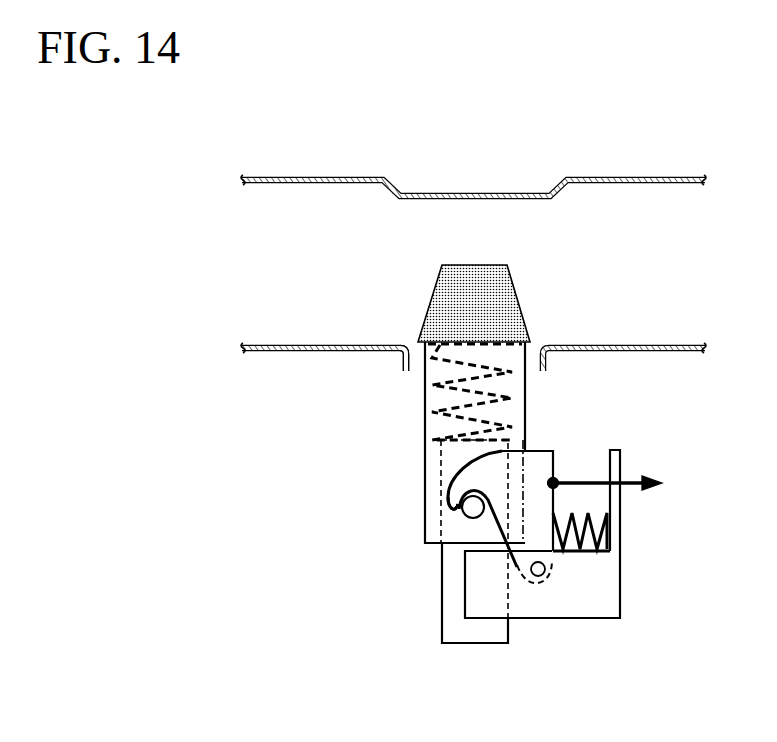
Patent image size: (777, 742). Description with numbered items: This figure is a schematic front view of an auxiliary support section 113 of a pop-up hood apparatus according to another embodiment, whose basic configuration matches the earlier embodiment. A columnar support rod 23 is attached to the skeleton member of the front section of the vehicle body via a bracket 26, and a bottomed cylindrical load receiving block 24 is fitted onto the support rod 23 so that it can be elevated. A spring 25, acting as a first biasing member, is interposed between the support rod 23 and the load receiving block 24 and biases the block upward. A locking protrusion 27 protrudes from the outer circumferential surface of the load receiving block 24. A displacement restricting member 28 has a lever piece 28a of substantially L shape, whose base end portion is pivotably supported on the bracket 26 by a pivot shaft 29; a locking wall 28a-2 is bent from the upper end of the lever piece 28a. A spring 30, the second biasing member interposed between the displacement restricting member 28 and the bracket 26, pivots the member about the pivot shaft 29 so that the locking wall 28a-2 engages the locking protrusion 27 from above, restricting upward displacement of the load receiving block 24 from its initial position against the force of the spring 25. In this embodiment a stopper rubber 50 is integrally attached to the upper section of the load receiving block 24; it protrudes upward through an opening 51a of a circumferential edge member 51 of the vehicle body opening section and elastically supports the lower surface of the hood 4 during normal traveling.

The hood 4 is at (663, 177).
The stopper rubber 50 is at (475, 264).
The circumferential edge member 51 is at (288, 345).
The opening 51a is at (405, 343).
The auxiliary support section 113 is at (548, 330).
The spring 25 is at (428, 322).
The load receiving block 24 is at (425, 420).
The displacement restricting member 28 is at (553, 450).
The lever piece 28a is at (525, 451).
The locking wall 28a-2 is at (452, 497).
The locking protrusion 27 is at (473, 512).
The pivot shaft 29 is at (538, 576).
The support rod 23 is at (445, 643).
The bracket 26 is at (603, 608).
The spring 30 is at (612, 498).